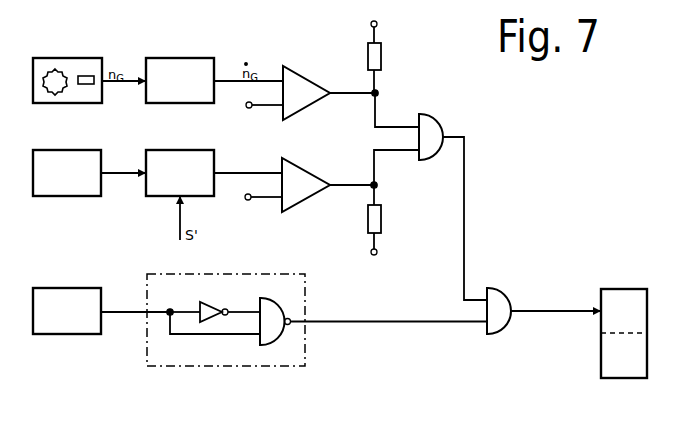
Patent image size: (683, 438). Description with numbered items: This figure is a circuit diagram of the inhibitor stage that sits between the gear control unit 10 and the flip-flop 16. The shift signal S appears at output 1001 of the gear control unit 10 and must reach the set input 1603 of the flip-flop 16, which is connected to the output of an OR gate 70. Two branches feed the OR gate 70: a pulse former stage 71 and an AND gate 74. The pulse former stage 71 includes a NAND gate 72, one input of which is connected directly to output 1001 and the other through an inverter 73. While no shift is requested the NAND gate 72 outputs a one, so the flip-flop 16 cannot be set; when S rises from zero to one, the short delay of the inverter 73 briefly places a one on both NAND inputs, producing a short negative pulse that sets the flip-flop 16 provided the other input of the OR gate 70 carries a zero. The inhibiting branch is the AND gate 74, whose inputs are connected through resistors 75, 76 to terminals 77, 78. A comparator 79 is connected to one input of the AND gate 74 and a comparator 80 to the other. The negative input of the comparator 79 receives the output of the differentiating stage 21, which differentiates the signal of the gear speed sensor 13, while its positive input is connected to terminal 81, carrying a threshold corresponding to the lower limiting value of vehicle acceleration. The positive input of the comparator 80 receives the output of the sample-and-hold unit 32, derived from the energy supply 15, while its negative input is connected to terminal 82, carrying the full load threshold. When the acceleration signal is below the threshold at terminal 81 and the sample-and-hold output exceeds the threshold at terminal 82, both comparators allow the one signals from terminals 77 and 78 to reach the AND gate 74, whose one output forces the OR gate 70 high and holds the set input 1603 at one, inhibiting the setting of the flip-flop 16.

The gear speed sensor 13 is at (70, 66).
The differentiating stage 21 is at (176, 66).
The energy supply 15 is at (66, 160).
The sample-and-hold unit 32 is at (170, 162).
The comparator 79 is at (300, 88).
The comparator 80 is at (306, 181).
The terminal 81 is at (247, 108).
The terminal 82 is at (246, 200).
The resistor 75 is at (375, 56).
The resistor 76 is at (375, 218).
The terminal 77 is at (377, 22).
The terminal 78 is at (378, 252).
The AND gate 74 is at (434, 131).
The OR gate 70 is at (500, 297).
The pulse former stage 71 is at (221, 358).
The NAND gate 72 is at (270, 313).
The inverter 73 is at (207, 308).
The gear control unit 10 is at (58, 303).
The output of gear control unit 1001 is at (105, 314).
The set input of flip-flop 1603 is at (598, 303).
The flip-flop 16 is at (623, 306).